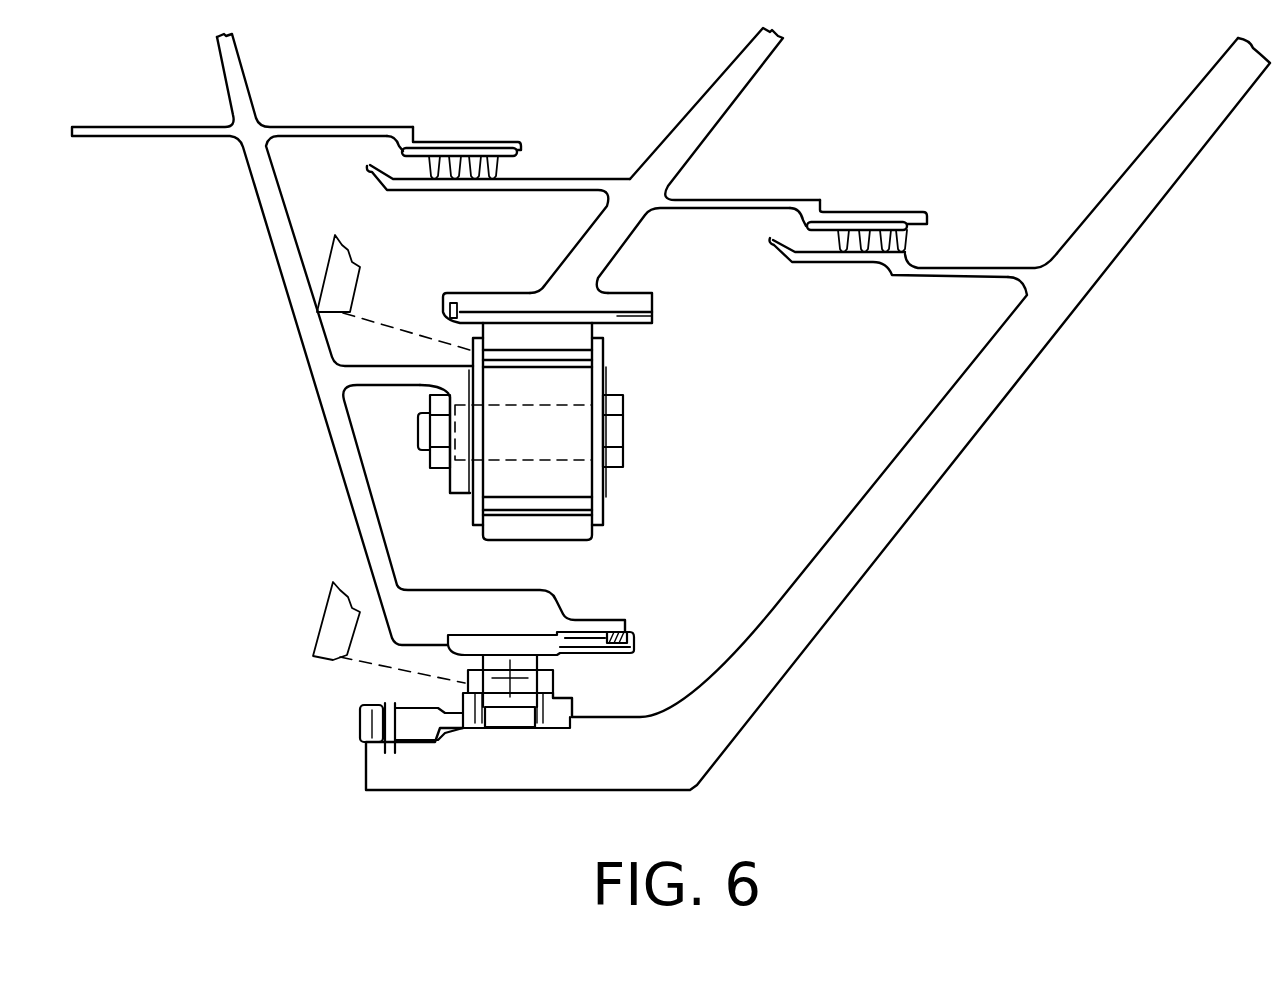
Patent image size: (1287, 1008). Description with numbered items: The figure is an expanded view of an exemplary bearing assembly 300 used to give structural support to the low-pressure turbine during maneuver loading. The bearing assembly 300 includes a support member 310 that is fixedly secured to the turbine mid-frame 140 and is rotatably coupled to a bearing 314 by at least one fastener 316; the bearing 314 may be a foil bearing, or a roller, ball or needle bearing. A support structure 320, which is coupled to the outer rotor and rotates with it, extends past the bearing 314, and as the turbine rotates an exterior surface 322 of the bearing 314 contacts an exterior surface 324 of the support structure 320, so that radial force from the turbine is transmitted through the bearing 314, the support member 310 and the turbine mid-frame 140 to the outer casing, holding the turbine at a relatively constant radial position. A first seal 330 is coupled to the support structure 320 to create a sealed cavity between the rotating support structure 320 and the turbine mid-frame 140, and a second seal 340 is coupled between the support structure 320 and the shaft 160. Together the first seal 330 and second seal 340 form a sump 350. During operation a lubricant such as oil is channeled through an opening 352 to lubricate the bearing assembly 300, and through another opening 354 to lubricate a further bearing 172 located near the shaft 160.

The turbine mid-frame 140 is at (305, 355).
The shaft 160 is at (922, 505).
The bearing 172 is at (540, 657).
The bearing assembly 300 is at (562, 433).
The support member 310 is at (425, 392).
The bearing 314 is at (570, 543).
The fastener 316 is at (625, 427).
The support structure 320 is at (752, 90).
The exterior surface 322 is at (597, 330).
The exterior surface 324 is at (468, 328).
The first seal 330 is at (497, 173).
The second seal 340 is at (915, 243).
The sump 350 is at (905, 383).
The opening 352 is at (341, 273).
The opening 354 is at (325, 613).